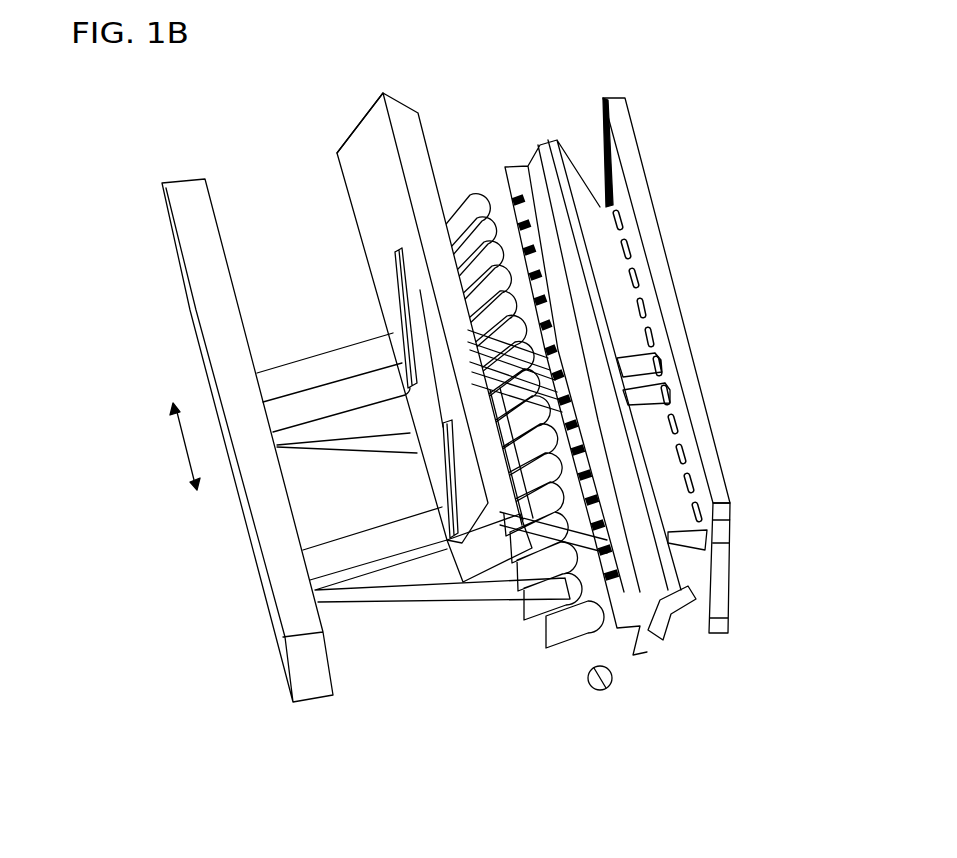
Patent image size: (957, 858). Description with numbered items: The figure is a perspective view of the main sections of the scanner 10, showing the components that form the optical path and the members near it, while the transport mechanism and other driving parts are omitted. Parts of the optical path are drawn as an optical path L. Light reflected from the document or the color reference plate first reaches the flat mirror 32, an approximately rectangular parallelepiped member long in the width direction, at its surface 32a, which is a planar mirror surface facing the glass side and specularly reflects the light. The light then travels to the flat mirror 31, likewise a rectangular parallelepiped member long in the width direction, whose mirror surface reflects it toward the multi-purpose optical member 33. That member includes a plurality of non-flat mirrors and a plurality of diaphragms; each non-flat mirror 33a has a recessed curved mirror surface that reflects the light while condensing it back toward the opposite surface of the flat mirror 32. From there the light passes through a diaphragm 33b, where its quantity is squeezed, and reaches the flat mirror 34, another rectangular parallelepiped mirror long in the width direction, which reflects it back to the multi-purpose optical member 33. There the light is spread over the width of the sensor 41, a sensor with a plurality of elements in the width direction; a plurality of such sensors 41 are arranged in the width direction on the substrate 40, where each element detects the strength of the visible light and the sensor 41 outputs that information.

The scanner 10 is at (240, 53).
The flat mirror 31 is at (175, 182).
The flat mirror 32 is at (407, 103).
The surface of flat mirror 32 32a is at (362, 138).
The multi-purpose optical member 33 is at (550, 417).
The non-flat mirror 33a is at (573, 637).
The diaphragm 33b is at (503, 187).
The flat mirror 34 is at (678, 623).
The substrate 40 is at (720, 458).
The sensor 41 is at (707, 553).
The optical path L is at (302, 357).